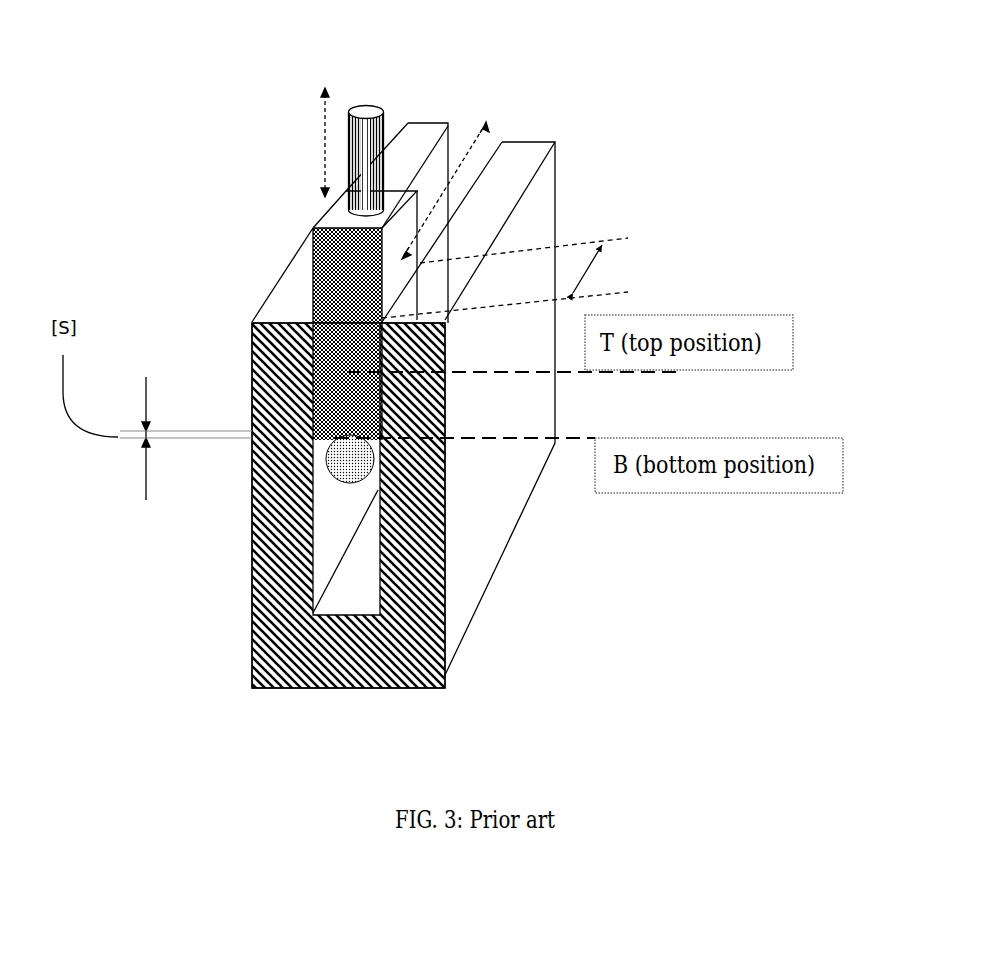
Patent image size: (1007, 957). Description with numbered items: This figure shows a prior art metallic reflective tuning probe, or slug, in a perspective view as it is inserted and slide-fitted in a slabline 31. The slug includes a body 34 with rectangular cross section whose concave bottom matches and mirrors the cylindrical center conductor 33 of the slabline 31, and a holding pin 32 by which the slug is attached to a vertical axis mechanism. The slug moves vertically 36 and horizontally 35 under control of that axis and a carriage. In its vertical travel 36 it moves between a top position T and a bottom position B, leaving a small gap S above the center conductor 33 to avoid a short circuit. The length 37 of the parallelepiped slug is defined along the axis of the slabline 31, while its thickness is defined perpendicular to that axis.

The slabline 31 is at (252, 590).
The holding pin 32 is at (358, 94).
The center conductor 33 is at (445, 517).
The body 34 is at (312, 278).
The horizontal movement 35 is at (466, 161).
The vertical movement 36 is at (325, 160).
The length 37 is at (590, 275).